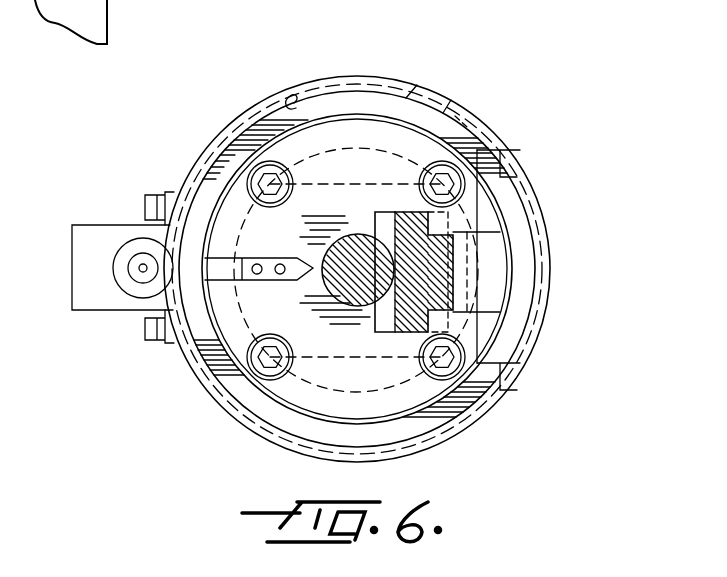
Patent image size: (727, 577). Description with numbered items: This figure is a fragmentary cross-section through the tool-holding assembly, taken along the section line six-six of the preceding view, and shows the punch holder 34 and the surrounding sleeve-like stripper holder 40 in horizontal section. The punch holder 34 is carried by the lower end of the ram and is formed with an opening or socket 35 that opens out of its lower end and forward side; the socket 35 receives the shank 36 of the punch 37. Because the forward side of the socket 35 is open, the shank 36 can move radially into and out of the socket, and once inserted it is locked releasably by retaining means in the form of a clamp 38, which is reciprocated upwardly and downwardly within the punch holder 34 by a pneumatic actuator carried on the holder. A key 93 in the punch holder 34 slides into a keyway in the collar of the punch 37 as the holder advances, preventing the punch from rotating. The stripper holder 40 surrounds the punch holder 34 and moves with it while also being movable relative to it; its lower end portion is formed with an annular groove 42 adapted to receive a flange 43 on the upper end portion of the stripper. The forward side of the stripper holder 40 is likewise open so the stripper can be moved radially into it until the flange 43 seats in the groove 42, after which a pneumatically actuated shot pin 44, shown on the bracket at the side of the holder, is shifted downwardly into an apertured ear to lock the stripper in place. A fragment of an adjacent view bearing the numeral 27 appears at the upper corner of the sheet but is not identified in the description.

The adjacent figure element 27 is at (108, 1).
The punch holder 34 is at (362, 120).
The socket 35 is at (392, 212).
The shank 36 is at (345, 246).
The punch 37 is at (324, 291).
The clamp 38 is at (410, 334).
The stripper holder 40 is at (508, 131).
The annular groove 42 is at (289, 99).
The flange 43 is at (442, 104).
The shot pin 44 is at (131, 260).
The key 93 is at (282, 246).